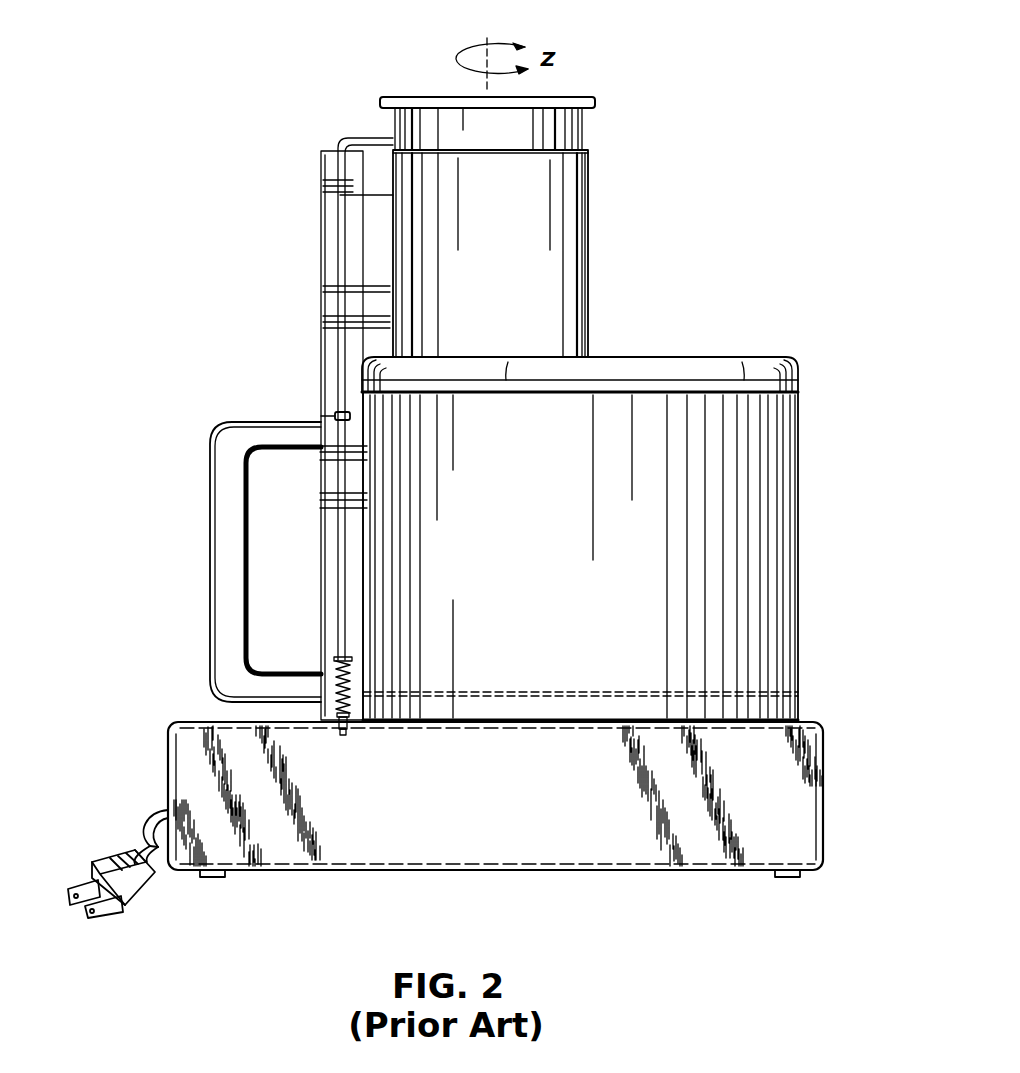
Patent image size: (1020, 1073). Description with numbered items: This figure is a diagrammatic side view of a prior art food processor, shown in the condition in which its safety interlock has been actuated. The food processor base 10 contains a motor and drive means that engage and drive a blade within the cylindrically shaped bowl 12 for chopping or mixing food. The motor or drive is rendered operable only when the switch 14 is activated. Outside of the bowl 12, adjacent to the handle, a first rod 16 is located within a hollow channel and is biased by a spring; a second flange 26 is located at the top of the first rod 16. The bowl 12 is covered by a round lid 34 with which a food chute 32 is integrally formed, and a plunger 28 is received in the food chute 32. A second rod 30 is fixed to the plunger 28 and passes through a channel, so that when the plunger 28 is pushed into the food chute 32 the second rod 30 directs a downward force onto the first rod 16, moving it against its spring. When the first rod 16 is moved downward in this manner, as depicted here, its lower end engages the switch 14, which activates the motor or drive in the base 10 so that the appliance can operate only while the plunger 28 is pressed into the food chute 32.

The food processor base 10 is at (516, 801).
The bowl 12 is at (528, 548).
The switch 14 is at (346, 736).
The first rod 16 is at (341, 548).
The second flange 26 is at (335, 413).
The plunger 28 is at (585, 130).
The second rod 30 is at (349, 141).
The food chute 32 is at (590, 183).
The round lid 34 is at (663, 357).